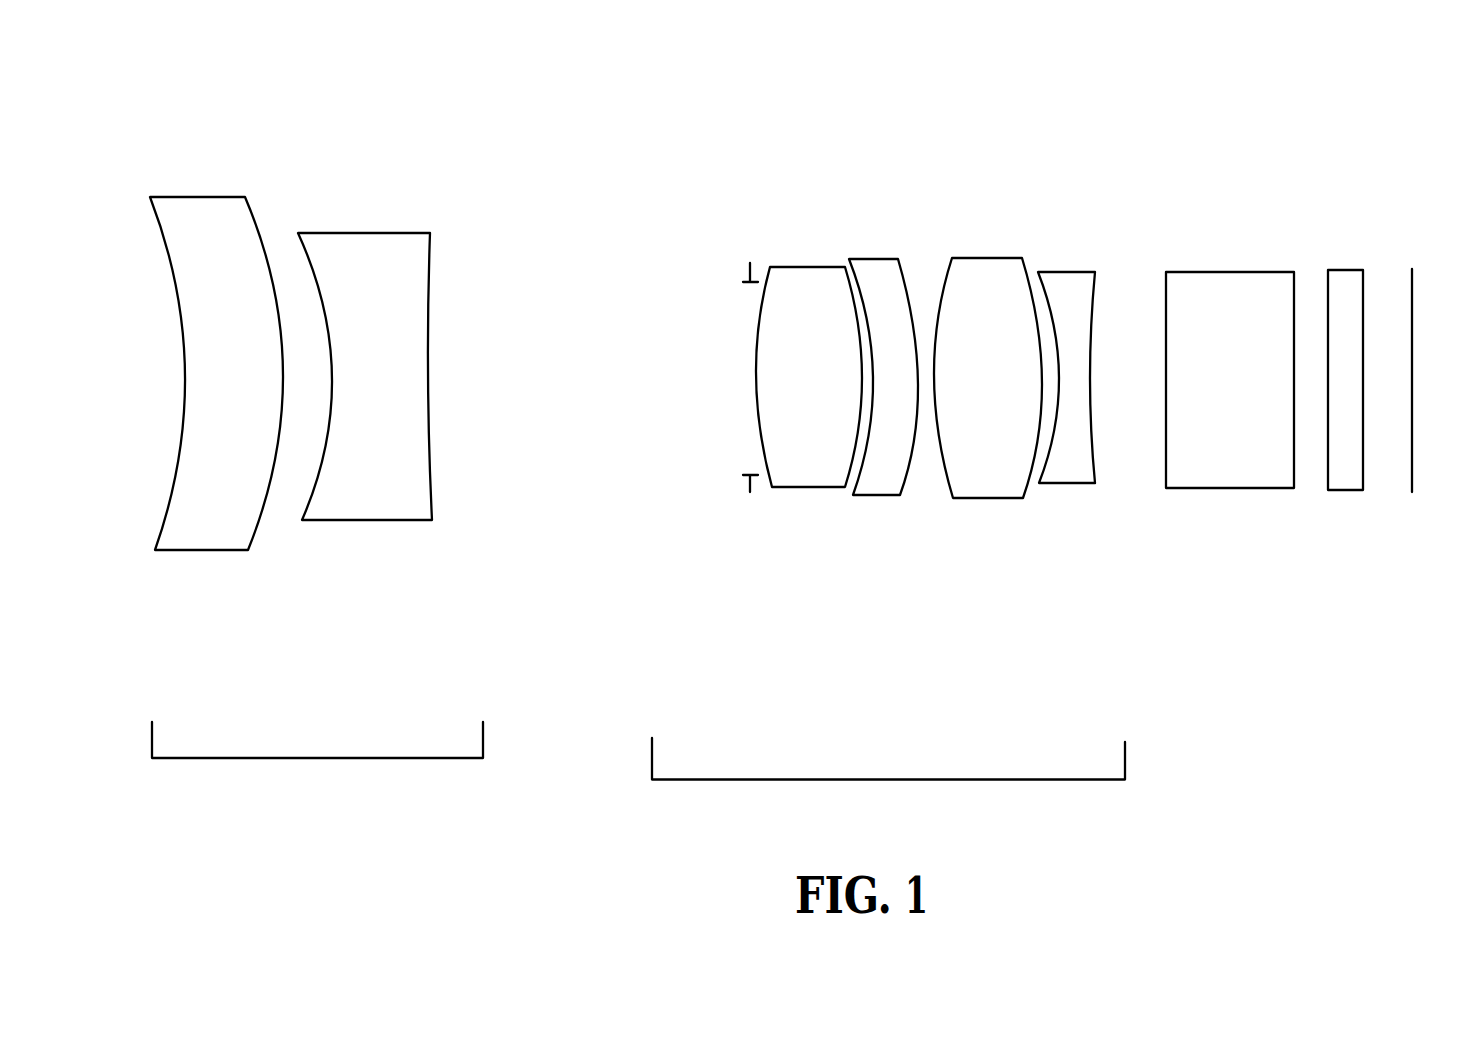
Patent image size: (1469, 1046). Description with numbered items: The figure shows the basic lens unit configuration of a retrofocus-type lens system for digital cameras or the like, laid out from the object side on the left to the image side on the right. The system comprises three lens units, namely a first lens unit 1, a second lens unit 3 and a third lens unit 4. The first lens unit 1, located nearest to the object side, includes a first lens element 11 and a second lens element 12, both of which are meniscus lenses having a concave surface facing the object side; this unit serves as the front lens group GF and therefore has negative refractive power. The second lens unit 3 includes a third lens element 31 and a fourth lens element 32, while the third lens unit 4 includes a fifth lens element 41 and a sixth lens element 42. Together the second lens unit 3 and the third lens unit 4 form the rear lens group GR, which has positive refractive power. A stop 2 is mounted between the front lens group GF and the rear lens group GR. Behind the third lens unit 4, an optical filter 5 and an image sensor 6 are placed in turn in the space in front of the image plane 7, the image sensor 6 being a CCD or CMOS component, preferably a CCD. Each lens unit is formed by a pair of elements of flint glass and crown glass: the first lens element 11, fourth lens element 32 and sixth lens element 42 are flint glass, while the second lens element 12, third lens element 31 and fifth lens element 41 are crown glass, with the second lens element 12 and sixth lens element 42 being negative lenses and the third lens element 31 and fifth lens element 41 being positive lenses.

The first lens unit 1 is at (281, 202).
The stop 2 is at (737, 247).
The second lens unit 3 is at (847, 230).
The third lens unit 4 is at (1041, 232).
The optical filter 5 is at (1217, 232).
The image sensor 6 is at (1339, 233).
The image plane 7 is at (1406, 245).
The first lens element 11 is at (210, 507).
The second lens element 12 is at (385, 473).
The third lens element 31 is at (810, 456).
The fourth lens element 32 is at (882, 457).
The fifth lens element 41 is at (990, 457).
The sixth lens element 42 is at (1065, 457).
The front lens group GF is at (317, 762).
The rear lens group GR is at (888, 780).